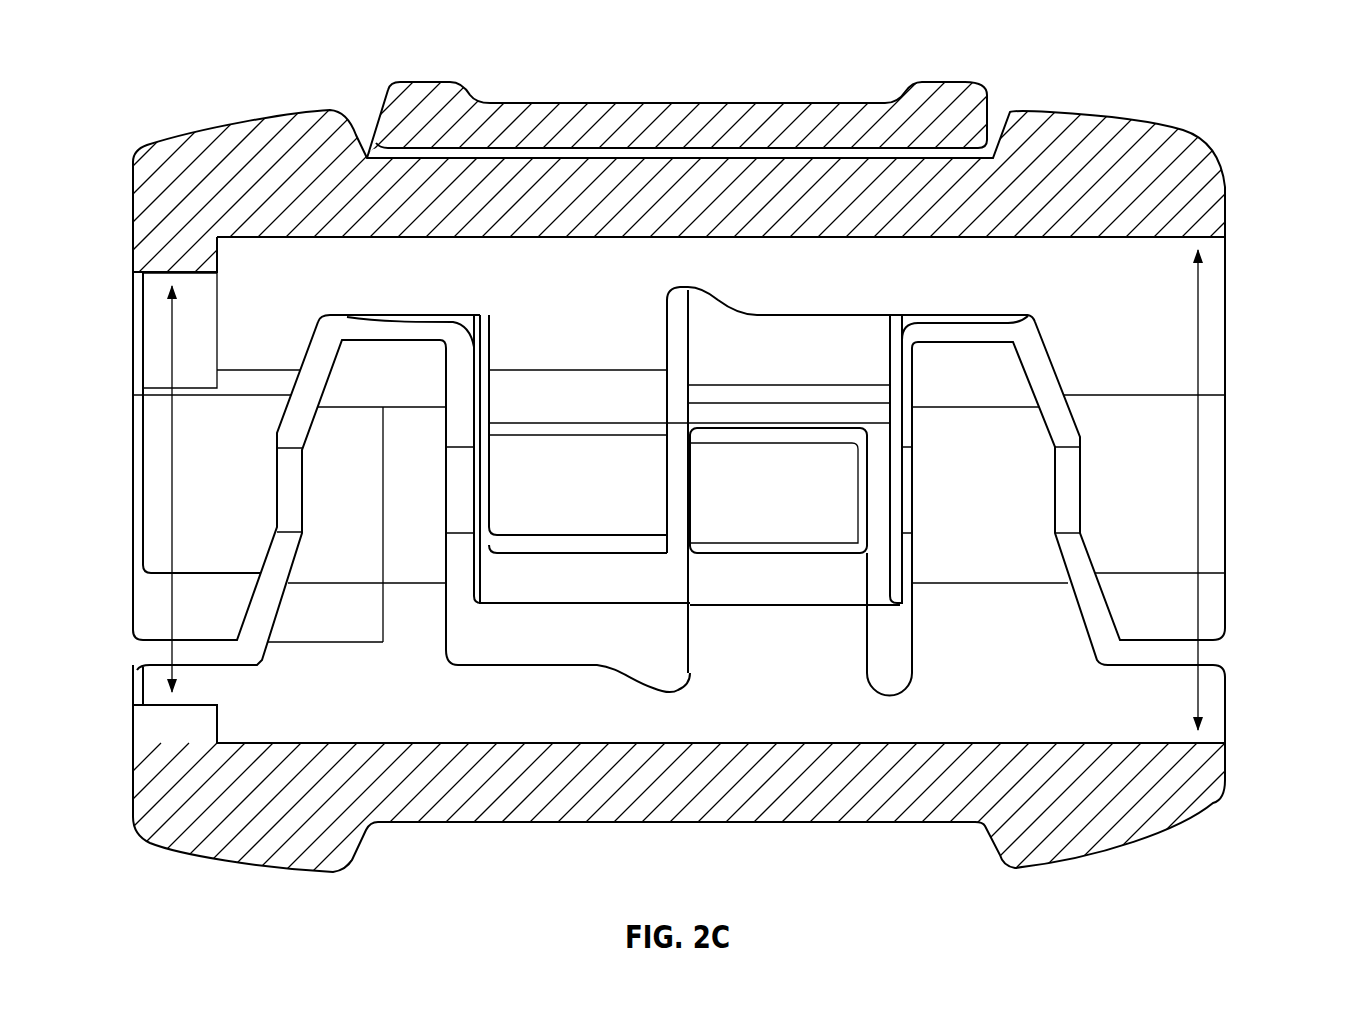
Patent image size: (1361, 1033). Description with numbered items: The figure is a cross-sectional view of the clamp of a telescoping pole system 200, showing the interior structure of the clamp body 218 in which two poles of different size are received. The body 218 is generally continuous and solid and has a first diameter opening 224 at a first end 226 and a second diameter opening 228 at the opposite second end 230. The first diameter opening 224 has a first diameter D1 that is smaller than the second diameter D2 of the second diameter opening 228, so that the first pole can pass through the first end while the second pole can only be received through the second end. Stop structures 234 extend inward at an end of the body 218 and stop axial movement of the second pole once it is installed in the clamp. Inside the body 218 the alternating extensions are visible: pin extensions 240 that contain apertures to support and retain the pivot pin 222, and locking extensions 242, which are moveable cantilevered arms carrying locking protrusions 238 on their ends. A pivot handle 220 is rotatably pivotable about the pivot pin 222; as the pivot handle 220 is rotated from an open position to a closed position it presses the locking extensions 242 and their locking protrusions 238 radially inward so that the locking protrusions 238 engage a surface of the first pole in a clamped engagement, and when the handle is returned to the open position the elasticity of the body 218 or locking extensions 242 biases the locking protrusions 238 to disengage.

The telescoping pole system 200 is at (1268, 77).
The body 218 is at (1138, 137).
The pivot handle 220 is at (952, 97).
The pivot pin 222 is at (285, 505).
The first diameter opening 224 is at (160, 519).
The first end 226 is at (134, 876).
The second diameter opening 228 is at (1210, 330).
The second end 230 is at (1218, 894).
The stop structures 234 is at (140, 198).
The locking protrusions 238 is at (830, 505).
The pin extensions 240 is at (148, 633).
The locking extensions 242 is at (548, 385).
The first diameter D1 is at (170, 445).
The second diameter D2 is at (1200, 498).